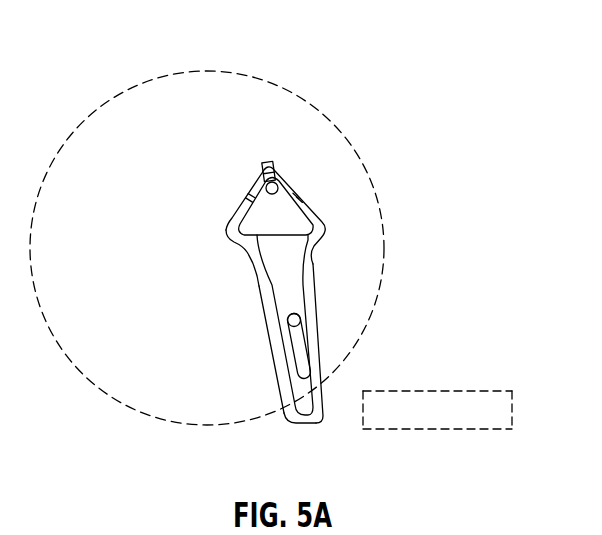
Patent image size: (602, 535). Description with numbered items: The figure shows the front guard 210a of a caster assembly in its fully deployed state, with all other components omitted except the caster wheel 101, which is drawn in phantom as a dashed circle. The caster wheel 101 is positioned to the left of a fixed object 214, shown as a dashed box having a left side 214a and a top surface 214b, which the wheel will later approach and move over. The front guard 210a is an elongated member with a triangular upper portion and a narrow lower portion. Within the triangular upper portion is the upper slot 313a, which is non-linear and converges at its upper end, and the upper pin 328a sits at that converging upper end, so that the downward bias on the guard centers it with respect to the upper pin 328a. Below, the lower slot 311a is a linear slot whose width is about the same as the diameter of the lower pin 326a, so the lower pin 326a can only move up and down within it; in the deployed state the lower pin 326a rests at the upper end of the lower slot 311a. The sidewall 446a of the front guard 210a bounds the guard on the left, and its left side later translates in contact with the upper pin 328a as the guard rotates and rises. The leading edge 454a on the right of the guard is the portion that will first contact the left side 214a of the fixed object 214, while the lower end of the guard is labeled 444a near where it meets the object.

The caster wheel 101 is at (323, 122).
The front guard 210a is at (318, 178).
The upper pin 328a is at (263, 172).
The upper slot 313a is at (255, 215).
The sidewall 446a is at (240, 243).
The lower pin 326a is at (292, 322).
The lower slot 311a is at (302, 360).
The leading edge 454a is at (324, 387).
The base 444a is at (313, 426).
The fixed object 214 is at (484, 424).
The left side 214a is at (357, 398).
The top surface 214b is at (490, 390).